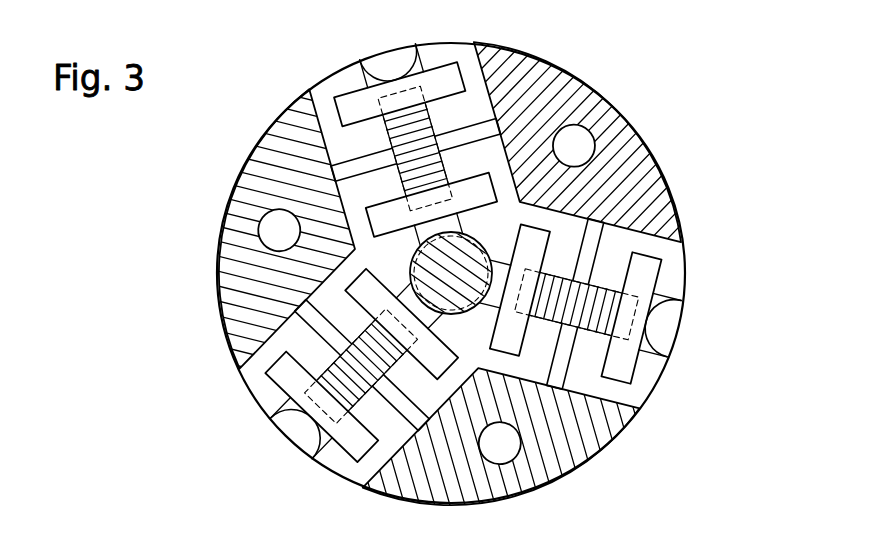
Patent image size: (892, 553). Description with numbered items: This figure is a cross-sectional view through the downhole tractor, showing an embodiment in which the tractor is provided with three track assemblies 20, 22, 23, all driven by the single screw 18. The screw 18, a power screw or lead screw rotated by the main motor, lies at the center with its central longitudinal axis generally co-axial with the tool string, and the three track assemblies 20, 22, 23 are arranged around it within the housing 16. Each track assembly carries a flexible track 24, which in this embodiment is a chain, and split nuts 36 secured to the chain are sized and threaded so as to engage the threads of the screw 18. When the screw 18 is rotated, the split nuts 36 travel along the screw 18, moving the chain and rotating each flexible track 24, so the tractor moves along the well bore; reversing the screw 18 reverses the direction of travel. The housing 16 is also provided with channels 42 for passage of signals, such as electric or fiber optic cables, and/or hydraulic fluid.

The housing 16 is at (570, 94).
The screw 18 is at (465, 313).
The first track assembly 20 is at (296, 64).
The second track assembly 22 is at (705, 343).
The third track assembly 23 is at (233, 434).
The flexible track 24 is at (453, 85).
The split nuts 36 is at (407, 62).
The channels 42 is at (586, 153).